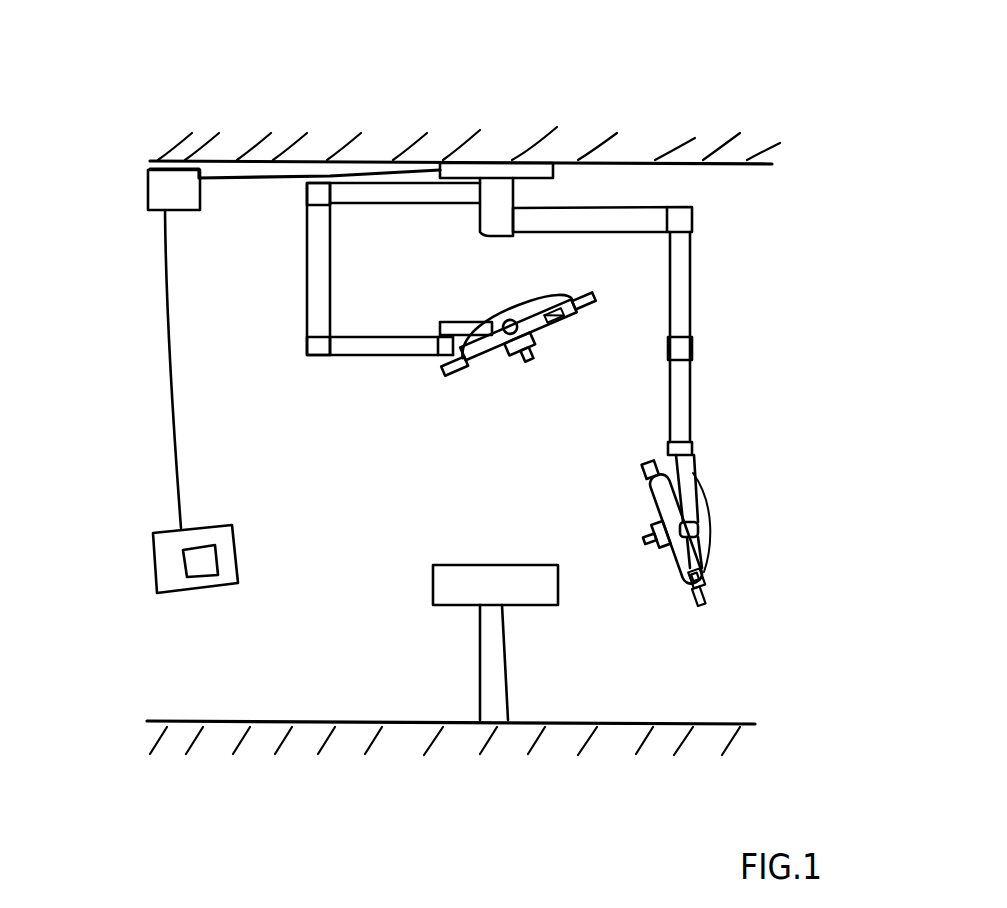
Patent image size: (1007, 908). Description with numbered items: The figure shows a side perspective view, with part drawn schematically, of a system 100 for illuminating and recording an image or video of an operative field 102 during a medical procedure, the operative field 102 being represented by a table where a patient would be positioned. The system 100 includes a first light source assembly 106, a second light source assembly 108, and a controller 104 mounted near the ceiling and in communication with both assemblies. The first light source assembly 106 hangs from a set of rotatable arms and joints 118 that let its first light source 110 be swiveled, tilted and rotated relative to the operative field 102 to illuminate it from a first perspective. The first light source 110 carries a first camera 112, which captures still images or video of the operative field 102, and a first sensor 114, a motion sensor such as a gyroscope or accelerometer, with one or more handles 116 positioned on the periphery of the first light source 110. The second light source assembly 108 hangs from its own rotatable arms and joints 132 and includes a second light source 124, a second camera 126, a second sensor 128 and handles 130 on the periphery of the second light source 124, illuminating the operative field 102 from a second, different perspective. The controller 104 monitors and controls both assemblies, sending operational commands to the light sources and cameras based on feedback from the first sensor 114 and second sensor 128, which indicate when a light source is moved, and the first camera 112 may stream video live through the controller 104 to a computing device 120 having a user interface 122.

The system 100 is at (793, 217).
The operative field 102 is at (455, 565).
The controller 104 is at (157, 187).
The first light source assembly 106 is at (303, 282).
The second light source assembly 108 is at (715, 518).
The first light source 110 is at (537, 300).
The first camera 112 is at (523, 360).
The first sensor 114 is at (567, 323).
The handles 116 is at (590, 297).
The rotatable arms and joints 118 is at (347, 197).
The computing device 120 is at (155, 532).
The user interface 122 is at (195, 565).
The second light source 124 is at (710, 567).
The second camera 126 is at (650, 547).
The second sensor 128 is at (707, 580).
The handles 130 is at (645, 463).
The rotatable arms and joints 132 is at (638, 205).